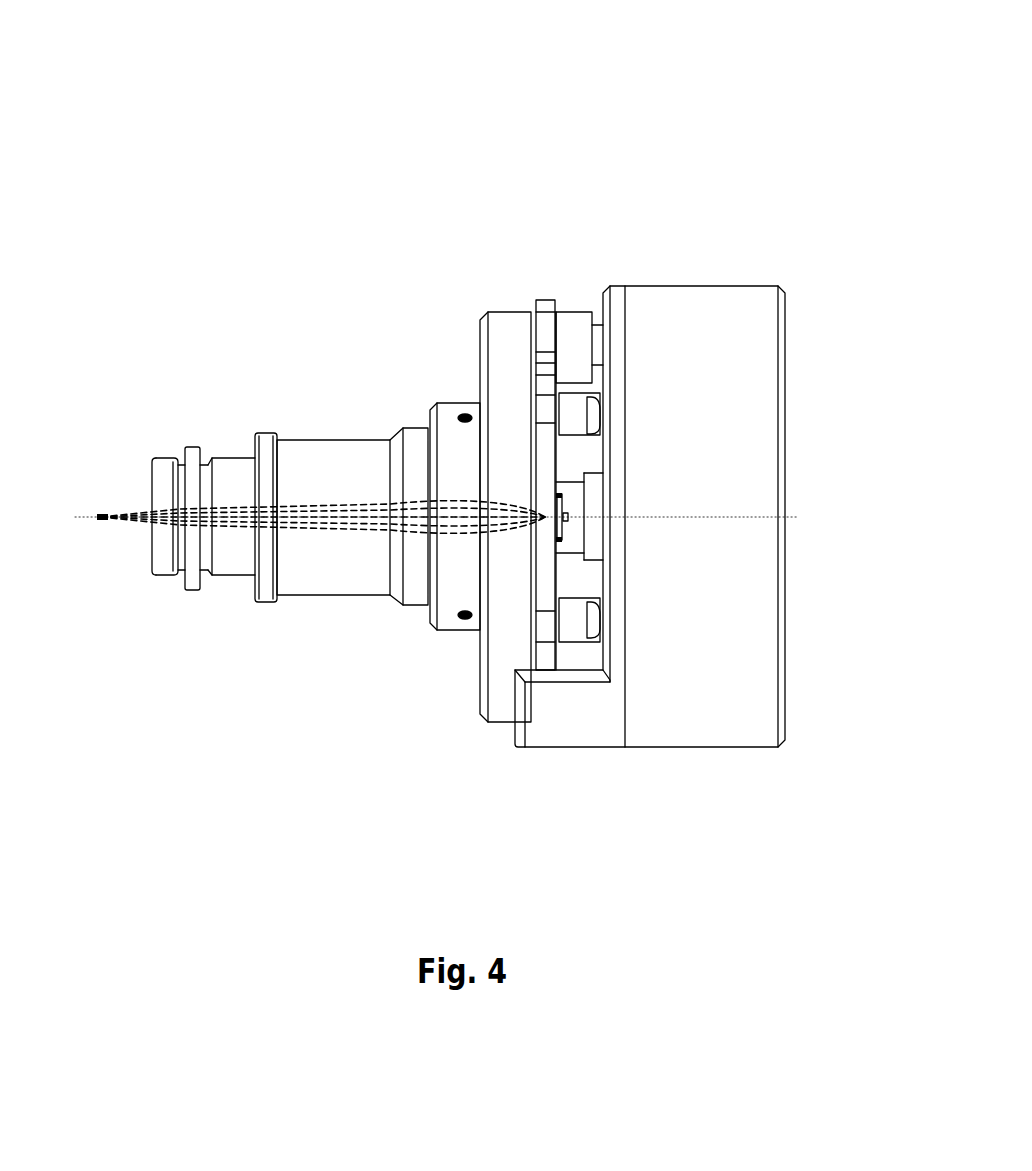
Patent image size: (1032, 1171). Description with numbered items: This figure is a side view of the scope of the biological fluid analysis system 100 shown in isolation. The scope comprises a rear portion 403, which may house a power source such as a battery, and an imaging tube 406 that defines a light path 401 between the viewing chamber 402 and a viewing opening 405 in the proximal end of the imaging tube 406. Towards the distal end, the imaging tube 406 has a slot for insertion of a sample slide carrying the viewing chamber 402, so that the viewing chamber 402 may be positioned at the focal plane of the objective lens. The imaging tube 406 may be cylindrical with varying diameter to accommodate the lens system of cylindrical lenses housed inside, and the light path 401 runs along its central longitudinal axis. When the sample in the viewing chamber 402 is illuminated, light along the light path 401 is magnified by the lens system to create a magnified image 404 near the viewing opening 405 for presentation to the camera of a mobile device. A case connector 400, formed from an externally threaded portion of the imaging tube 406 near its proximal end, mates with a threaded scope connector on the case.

The biological fluid analysis system 100 is at (532, 165).
The case connector 400 is at (163, 565).
The light path 401 is at (417, 517).
The viewing chamber 402 is at (540, 521).
The rear portion 403 is at (757, 317).
The magnified image 404 is at (100, 510).
The viewing opening 405 is at (151, 542).
The imaging tube 406 is at (555, 288).